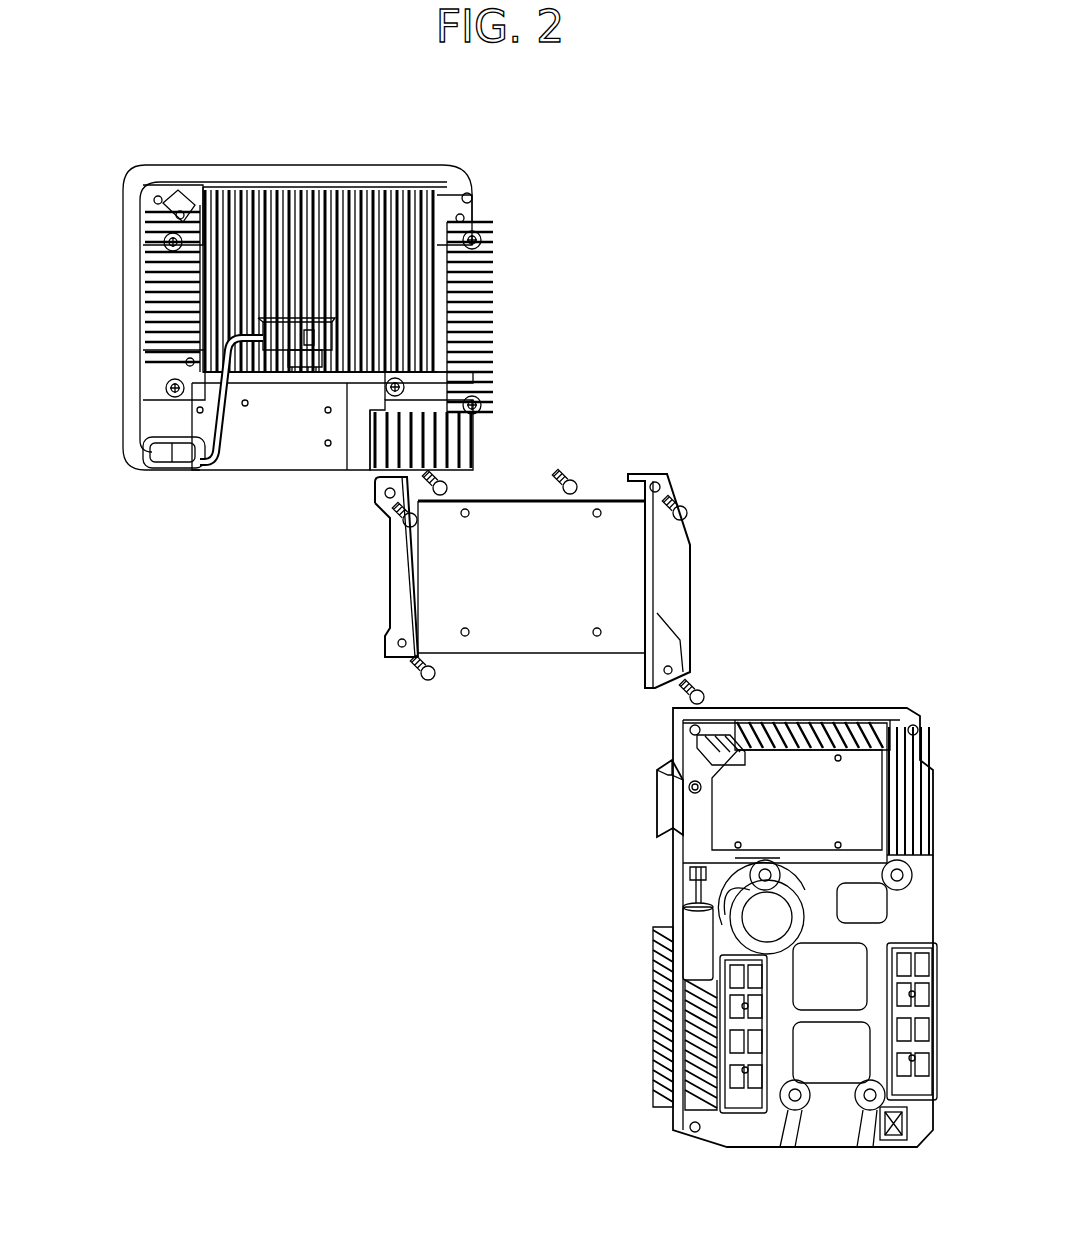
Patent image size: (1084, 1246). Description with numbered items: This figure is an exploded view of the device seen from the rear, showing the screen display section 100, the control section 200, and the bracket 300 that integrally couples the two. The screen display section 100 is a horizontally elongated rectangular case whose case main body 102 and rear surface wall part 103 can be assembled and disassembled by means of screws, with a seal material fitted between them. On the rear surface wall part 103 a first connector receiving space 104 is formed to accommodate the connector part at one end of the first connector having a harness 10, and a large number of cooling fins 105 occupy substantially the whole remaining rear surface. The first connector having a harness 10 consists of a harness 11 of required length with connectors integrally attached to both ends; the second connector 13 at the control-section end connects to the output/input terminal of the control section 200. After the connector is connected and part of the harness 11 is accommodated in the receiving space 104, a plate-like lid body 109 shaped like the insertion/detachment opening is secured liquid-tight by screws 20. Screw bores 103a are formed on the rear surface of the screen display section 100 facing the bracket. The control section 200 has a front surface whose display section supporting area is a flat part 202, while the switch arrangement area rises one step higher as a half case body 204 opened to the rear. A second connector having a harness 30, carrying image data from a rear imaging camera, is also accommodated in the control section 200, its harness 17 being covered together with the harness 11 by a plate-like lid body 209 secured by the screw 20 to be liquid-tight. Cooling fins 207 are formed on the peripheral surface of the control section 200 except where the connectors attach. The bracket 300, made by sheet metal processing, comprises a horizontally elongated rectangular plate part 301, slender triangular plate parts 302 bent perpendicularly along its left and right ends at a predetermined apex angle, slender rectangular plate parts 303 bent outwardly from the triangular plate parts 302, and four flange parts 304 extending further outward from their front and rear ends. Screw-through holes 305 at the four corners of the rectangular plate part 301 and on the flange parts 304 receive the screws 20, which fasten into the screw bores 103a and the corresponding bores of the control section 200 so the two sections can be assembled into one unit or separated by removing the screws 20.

The first connector having a harness 10 is at (297, 382).
The harness 11 is at (143, 283).
The second connector 13 is at (297, 335).
The harness 17 is at (697, 875).
The screws 20 is at (573, 480).
The second connector having a harness 30 is at (688, 897).
The screen display section 100 is at (577, 312).
The case main body 102 is at (128, 298).
The rear surface wall part 103 is at (148, 418).
The screw bores 103a is at (192, 215).
The first connector receiving space 104 is at (215, 477).
The cooling fins 105 is at (485, 323).
The lid body 109 is at (243, 453).
The control section 200 is at (587, 887).
The flat part 202 is at (870, 700).
The half case body 204 is at (653, 1017).
The cooling fins 207 is at (870, 790).
The lid body 209 is at (697, 810).
The bracket 300 is at (745, 575).
The rectangular plate part 301 is at (542, 638).
The triangular plate parts 302 is at (413, 542).
The rectangular plate parts 303 is at (395, 595).
The flange parts 304 is at (405, 660).
The screw-through holes 305 is at (400, 650).